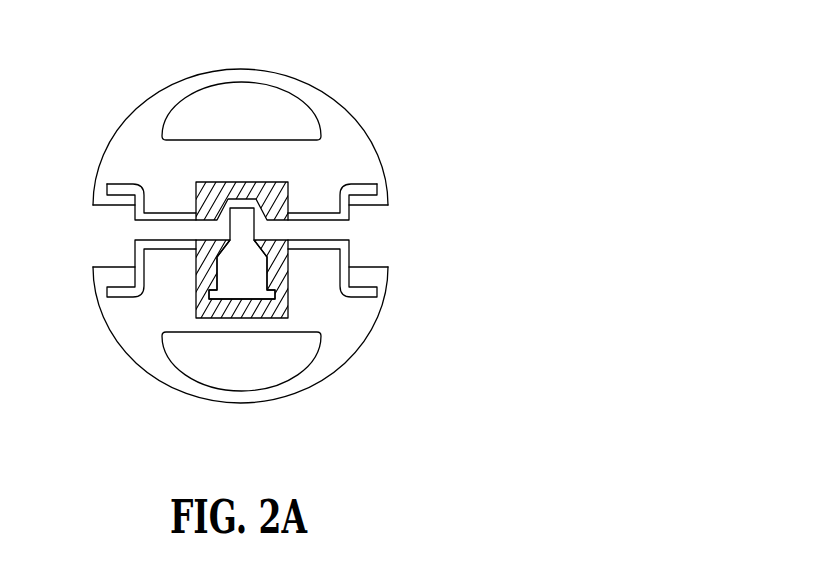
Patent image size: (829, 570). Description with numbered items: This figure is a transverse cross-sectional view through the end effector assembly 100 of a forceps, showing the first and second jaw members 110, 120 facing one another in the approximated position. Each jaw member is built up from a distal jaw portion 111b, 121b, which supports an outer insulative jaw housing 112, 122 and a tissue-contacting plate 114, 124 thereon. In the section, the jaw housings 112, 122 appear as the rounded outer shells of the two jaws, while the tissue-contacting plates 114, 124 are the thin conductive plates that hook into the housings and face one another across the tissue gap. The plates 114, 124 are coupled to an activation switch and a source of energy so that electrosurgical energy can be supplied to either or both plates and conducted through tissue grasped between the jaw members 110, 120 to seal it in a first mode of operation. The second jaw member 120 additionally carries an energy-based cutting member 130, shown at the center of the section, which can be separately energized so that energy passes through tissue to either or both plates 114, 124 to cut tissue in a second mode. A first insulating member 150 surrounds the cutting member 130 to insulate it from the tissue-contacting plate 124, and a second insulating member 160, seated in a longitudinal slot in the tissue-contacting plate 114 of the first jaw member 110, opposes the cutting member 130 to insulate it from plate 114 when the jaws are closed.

The end effector assembly 100 is at (405, 45).
The first jaw member 110 is at (216, 61).
The distal jaw portion 111b is at (260, 100).
The outer insulative jaw housing 112 is at (330, 129).
The tissue-contacting plate 114 is at (335, 221).
The second jaw member 120 is at (216, 414).
The distal jaw portion 121b is at (258, 375).
The outer insulative jaw housing 122 is at (340, 320).
The tissue-contacting plate 124 is at (333, 234).
The energy-based cutting member 130 is at (232, 267).
The first insulating member 150 is at (217, 310).
The second insulating member 160 is at (239, 196).